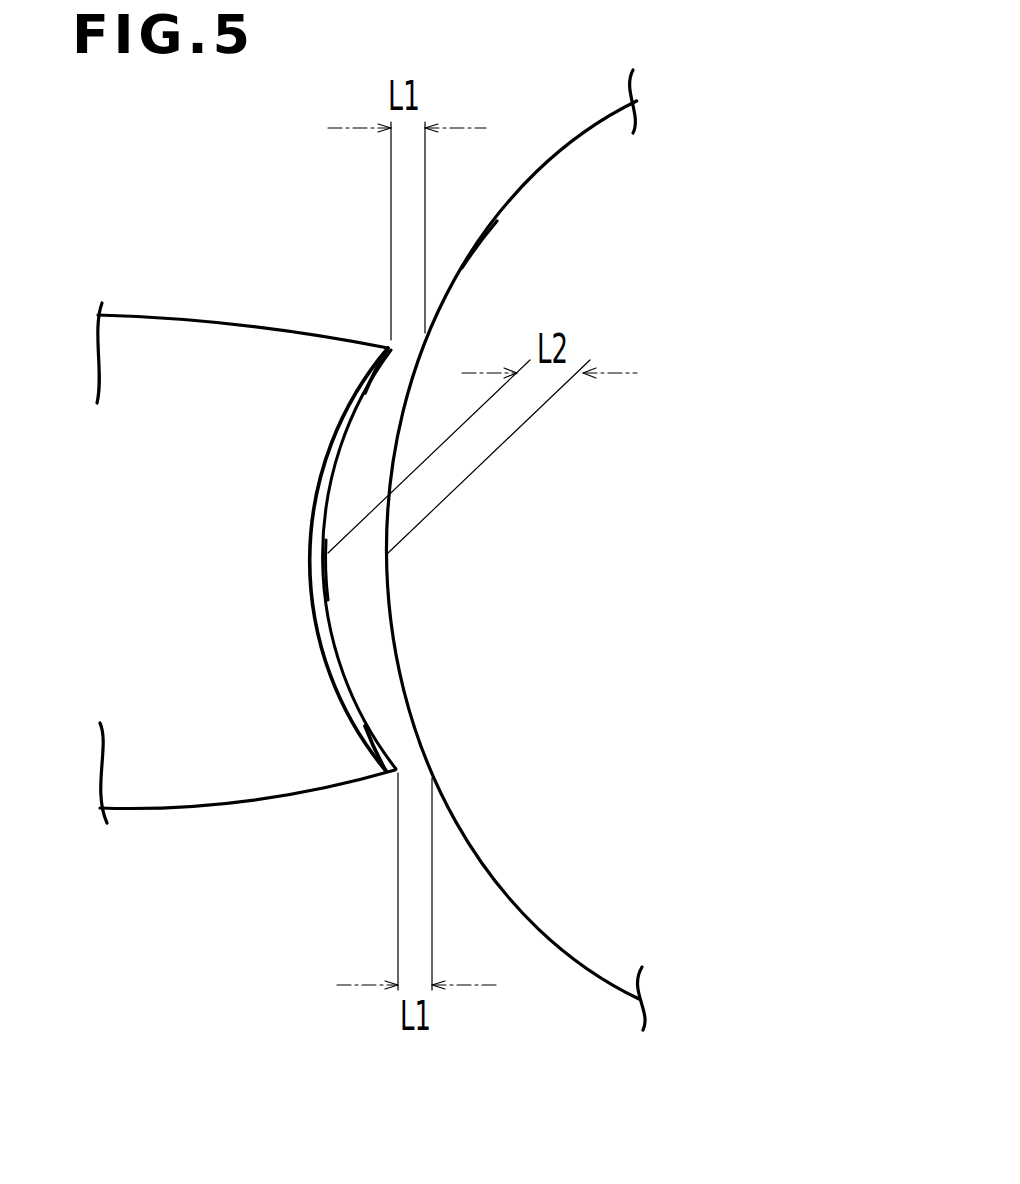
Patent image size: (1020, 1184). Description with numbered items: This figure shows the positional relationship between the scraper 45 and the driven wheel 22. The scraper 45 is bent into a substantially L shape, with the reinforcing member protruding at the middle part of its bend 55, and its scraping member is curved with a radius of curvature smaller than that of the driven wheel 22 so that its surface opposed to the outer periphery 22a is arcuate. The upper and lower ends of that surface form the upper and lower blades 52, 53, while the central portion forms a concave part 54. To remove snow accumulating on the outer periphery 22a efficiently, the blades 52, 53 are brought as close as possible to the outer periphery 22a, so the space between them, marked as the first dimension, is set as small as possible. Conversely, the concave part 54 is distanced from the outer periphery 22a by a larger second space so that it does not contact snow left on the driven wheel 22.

The driven wheel 22 is at (546, 161).
The outer periphery of the driven wheel 22a is at (472, 253).
The scraper 45 is at (175, 314).
The upper blade 52 is at (383, 345).
The lower blade 53 is at (386, 775).
The concave part 54 is at (328, 517).
The bend 55 is at (329, 577).